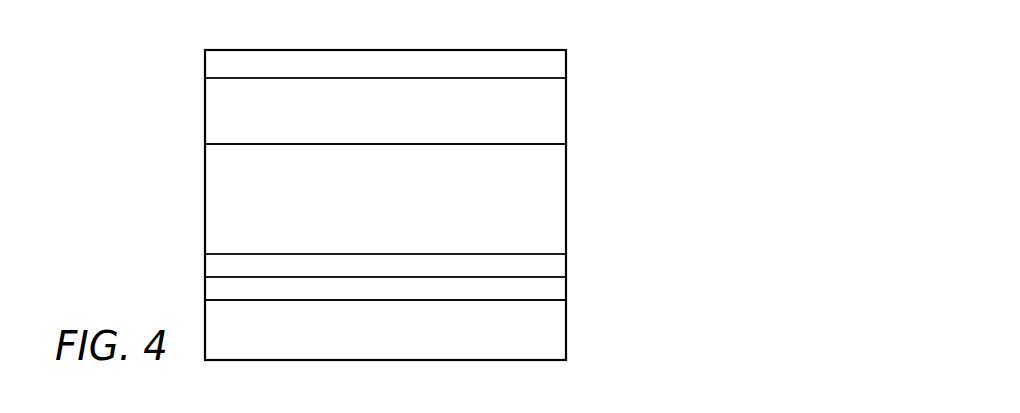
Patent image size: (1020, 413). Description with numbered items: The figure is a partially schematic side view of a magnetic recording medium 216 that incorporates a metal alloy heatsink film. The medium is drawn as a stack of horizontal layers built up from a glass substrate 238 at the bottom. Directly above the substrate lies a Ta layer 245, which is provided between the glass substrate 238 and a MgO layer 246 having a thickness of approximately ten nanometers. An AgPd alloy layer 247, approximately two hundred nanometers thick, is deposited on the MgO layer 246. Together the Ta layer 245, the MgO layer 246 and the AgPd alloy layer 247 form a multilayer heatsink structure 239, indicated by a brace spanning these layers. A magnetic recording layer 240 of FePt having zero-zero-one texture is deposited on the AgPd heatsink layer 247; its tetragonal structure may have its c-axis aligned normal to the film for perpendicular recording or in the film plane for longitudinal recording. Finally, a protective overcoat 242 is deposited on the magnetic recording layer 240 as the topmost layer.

The magnetic recording medium 216 is at (182, 110).
The protective overcoat 242 is at (558, 70).
The magnetic recording layer 240 is at (558, 117).
The AgPd alloy layer 247 is at (556, 202).
The MgO layer 246 is at (558, 265).
The Ta layer 245 is at (556, 288).
The glass substrate 238 is at (556, 337).
The multilayer heatsink structure 239 is at (203, 144).